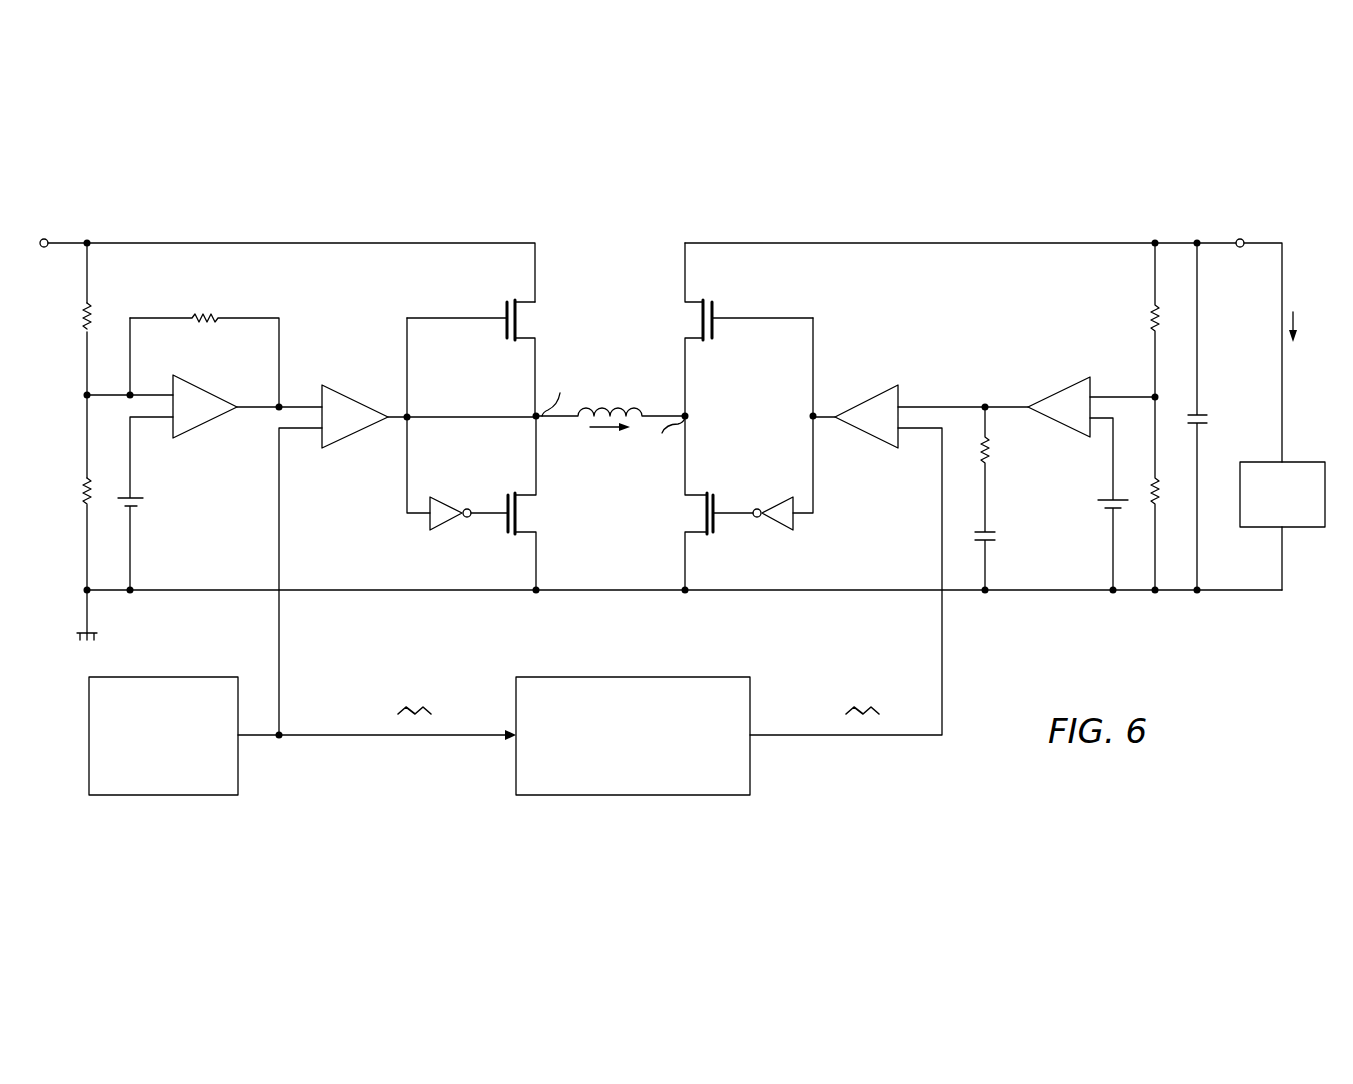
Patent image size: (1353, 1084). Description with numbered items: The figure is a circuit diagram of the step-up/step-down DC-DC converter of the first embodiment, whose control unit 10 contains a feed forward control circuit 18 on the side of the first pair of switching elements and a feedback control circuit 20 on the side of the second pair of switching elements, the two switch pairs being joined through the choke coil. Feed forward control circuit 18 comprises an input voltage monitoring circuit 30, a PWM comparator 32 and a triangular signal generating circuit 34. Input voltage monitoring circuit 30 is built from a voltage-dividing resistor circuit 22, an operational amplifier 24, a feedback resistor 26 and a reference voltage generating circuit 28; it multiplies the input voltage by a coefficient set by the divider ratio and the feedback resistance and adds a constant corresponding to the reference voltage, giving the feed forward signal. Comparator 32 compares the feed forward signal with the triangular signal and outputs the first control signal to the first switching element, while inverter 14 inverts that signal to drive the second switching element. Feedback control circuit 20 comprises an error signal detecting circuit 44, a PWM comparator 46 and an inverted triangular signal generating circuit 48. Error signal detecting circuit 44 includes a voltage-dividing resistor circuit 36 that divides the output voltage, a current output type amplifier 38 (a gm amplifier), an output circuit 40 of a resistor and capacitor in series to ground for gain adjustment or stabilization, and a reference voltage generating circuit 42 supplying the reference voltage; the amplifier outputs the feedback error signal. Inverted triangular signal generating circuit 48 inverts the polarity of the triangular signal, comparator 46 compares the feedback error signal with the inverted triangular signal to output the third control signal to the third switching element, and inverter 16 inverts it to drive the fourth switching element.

The control unit 10 is at (1025, 190).
The input voltage monitoring circuit 30 is at (139, 222).
The voltage-dividing resistor circuit 22 is at (87, 362).
The operational amplifier 24 is at (206, 388).
The feedback resistor 26 is at (197, 313).
The reference voltage generating circuit 28 is at (142, 503).
The feed forward control circuit 18 is at (310, 330).
The PWM comparator 32 is at (358, 394).
The inverter 14 is at (450, 527).
The feedback control circuit 20 is at (868, 328).
The PWM comparator 46 is at (868, 397).
The inverter 16 is at (770, 528).
The error signal detecting circuit 44 is at (1068, 328).
The current output type amplifier 38 is at (1060, 388).
The voltage-dividing resistor circuit 36 is at (1153, 364).
The output circuit 40 is at (985, 507).
The reference voltage generating circuit 42 is at (1102, 505).
The triangular signal generating circuit 34 is at (167, 798).
The inverted triangular signal generating circuit 48 is at (633, 798).